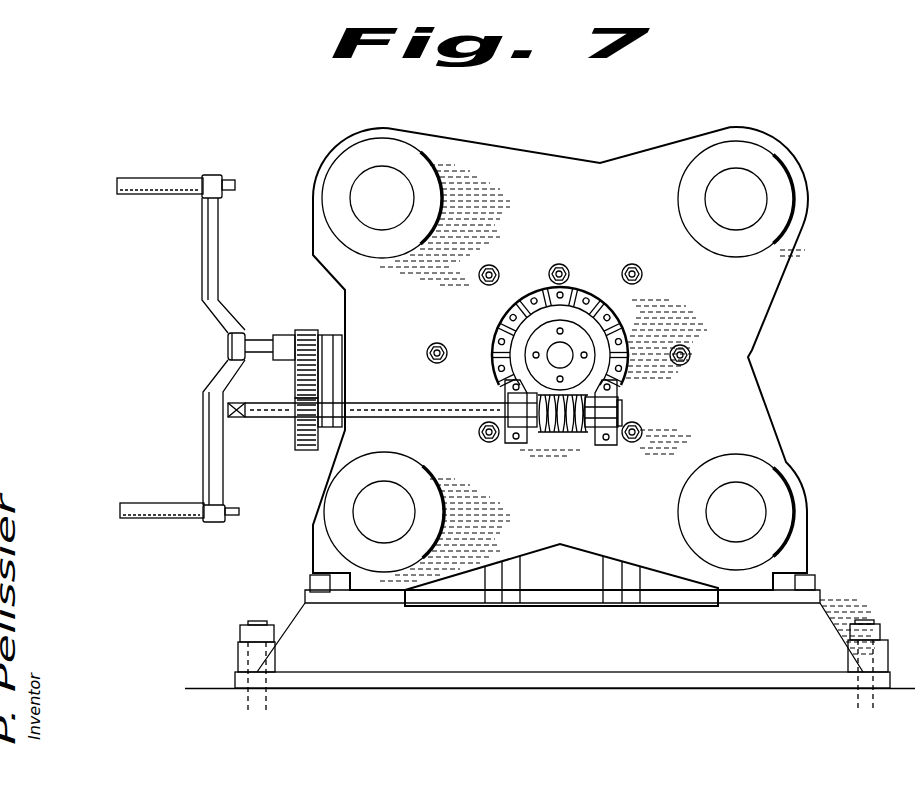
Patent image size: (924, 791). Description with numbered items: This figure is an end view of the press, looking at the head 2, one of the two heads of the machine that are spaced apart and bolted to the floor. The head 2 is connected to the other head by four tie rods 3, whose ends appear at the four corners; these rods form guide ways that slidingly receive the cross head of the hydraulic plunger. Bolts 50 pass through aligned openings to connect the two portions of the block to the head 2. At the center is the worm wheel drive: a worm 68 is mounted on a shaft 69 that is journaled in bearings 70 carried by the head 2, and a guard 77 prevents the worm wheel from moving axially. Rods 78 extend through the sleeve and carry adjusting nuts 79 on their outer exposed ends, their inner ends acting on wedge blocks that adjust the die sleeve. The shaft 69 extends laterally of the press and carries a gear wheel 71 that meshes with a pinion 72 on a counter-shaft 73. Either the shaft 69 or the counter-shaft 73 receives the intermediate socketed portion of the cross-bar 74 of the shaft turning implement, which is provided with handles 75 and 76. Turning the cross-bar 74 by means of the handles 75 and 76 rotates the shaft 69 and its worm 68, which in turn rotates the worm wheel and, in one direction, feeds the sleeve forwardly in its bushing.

The head 2 is at (613, 176).
The tie rods 3 is at (382, 186).
The bolts 50 is at (628, 266).
The worm 68 is at (570, 418).
The shaft 69 is at (458, 414).
The bearings 70 is at (522, 414).
The gear wheel 71 is at (305, 448).
The pinion 72 is at (304, 330).
The counter-shaft 73 is at (243, 339).
The cross-bar 74 is at (215, 258).
The handle 75 is at (143, 178).
The handle 76 is at (143, 510).
The guard 77 is at (598, 322).
The rods 78 is at (627, 337).
The adjusting nuts 79 is at (586, 366).